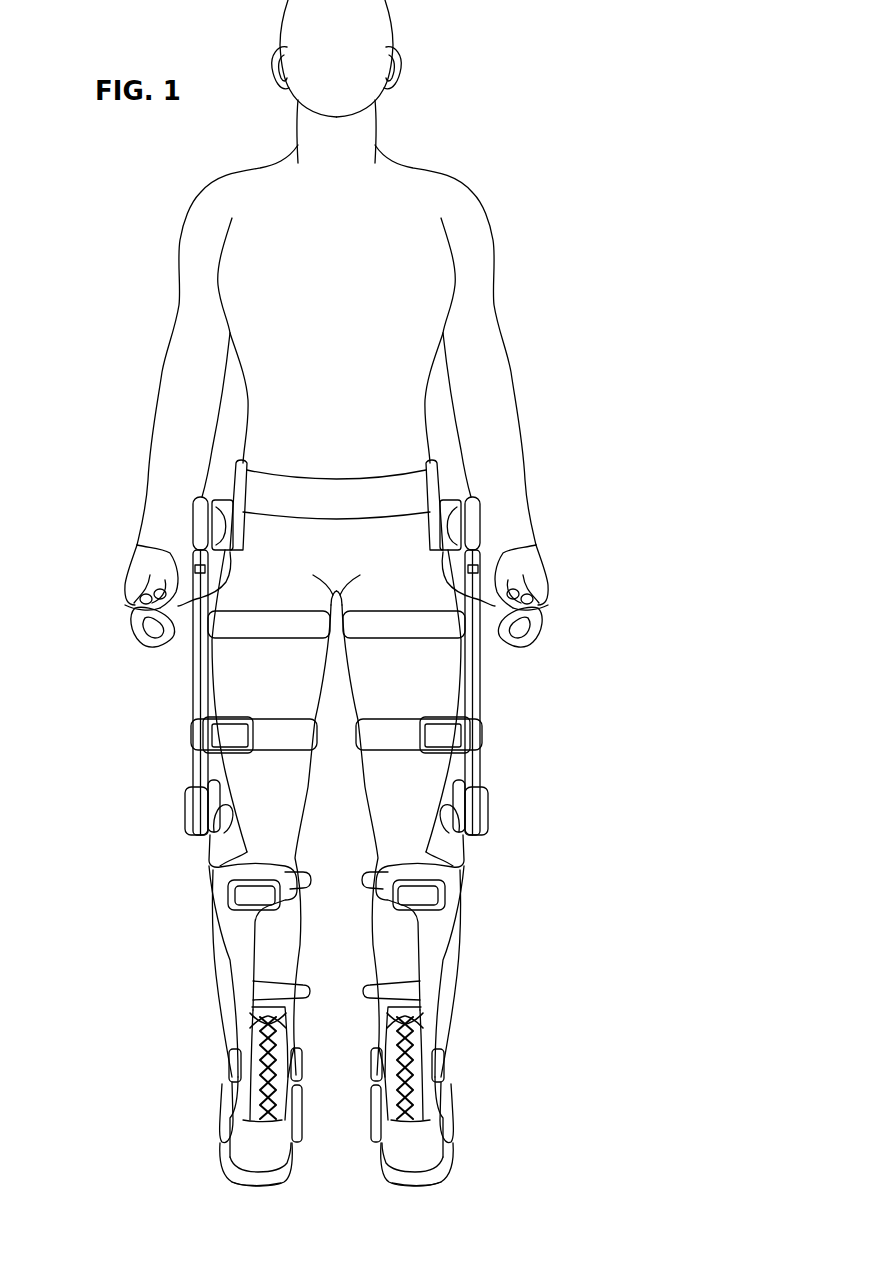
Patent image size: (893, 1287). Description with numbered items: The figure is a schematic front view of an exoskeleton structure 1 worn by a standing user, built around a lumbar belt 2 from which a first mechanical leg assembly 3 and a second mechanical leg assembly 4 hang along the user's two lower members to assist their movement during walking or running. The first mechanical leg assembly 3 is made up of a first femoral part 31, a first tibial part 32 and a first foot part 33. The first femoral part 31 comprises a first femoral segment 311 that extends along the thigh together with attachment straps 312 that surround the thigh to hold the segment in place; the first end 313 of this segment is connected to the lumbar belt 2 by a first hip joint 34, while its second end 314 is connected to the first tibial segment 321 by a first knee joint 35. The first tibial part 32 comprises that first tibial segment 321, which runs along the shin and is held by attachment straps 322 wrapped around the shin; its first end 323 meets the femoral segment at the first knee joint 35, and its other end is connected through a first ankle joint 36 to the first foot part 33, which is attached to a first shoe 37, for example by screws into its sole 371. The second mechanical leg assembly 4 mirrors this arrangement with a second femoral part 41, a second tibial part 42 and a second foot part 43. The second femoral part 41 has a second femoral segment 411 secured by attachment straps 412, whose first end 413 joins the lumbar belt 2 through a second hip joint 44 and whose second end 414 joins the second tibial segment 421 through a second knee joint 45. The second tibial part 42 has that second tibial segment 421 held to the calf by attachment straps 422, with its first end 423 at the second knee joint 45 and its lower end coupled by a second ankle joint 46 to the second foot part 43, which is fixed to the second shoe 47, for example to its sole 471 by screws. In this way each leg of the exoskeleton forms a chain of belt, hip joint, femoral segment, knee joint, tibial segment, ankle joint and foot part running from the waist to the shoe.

The exoskeleton structure 1 is at (73, 682).
The lumbar belt 2 is at (385, 497).
The first mechanical leg assembly 3 is at (182, 667).
The second mechanical leg assembly 4 is at (490, 667).
The first femoral part 31 is at (196, 735).
The first tibial part 32 is at (235, 957).
The first foot part 33 is at (230, 1108).
The first hip joint 34 is at (203, 527).
The first knee joint 35 is at (180, 817).
The first ankle joint 36 is at (224, 1074).
The first shoe 37 is at (248, 1150).
The first femoral segment 311 is at (197, 619).
The attachment straps 312 is at (255, 627).
The first end of first femoral segment 313 is at (198, 538).
The second end of first femoral segment 314 is at (192, 788).
The first tibial segment 321 is at (228, 990).
The attachment straps 322 is at (298, 877).
The first end of first tibial segment 323 is at (222, 812).
The sole 371 is at (237, 1183).
The second femoral part 41 is at (477, 735).
The second tibial part 42 is at (440, 957).
The second foot part 43 is at (443, 1108).
The second hip joint 44 is at (470, 527).
The second knee joint 45 is at (493, 817).
The second ankle joint 46 is at (450, 1074).
The second shoe 47 is at (426, 1150).
The second femoral segment 411 is at (477, 619).
The attachment straps 412 is at (418, 627).
The first end of second femoral segment 413 is at (474, 538).
The second end of second femoral segment 414 is at (482, 788).
The second tibial segment 421 is at (445, 990).
The attachment straps 422 is at (378, 880).
The first end of second tibial segment 423 is at (451, 812).
The sole 471 is at (437, 1183).